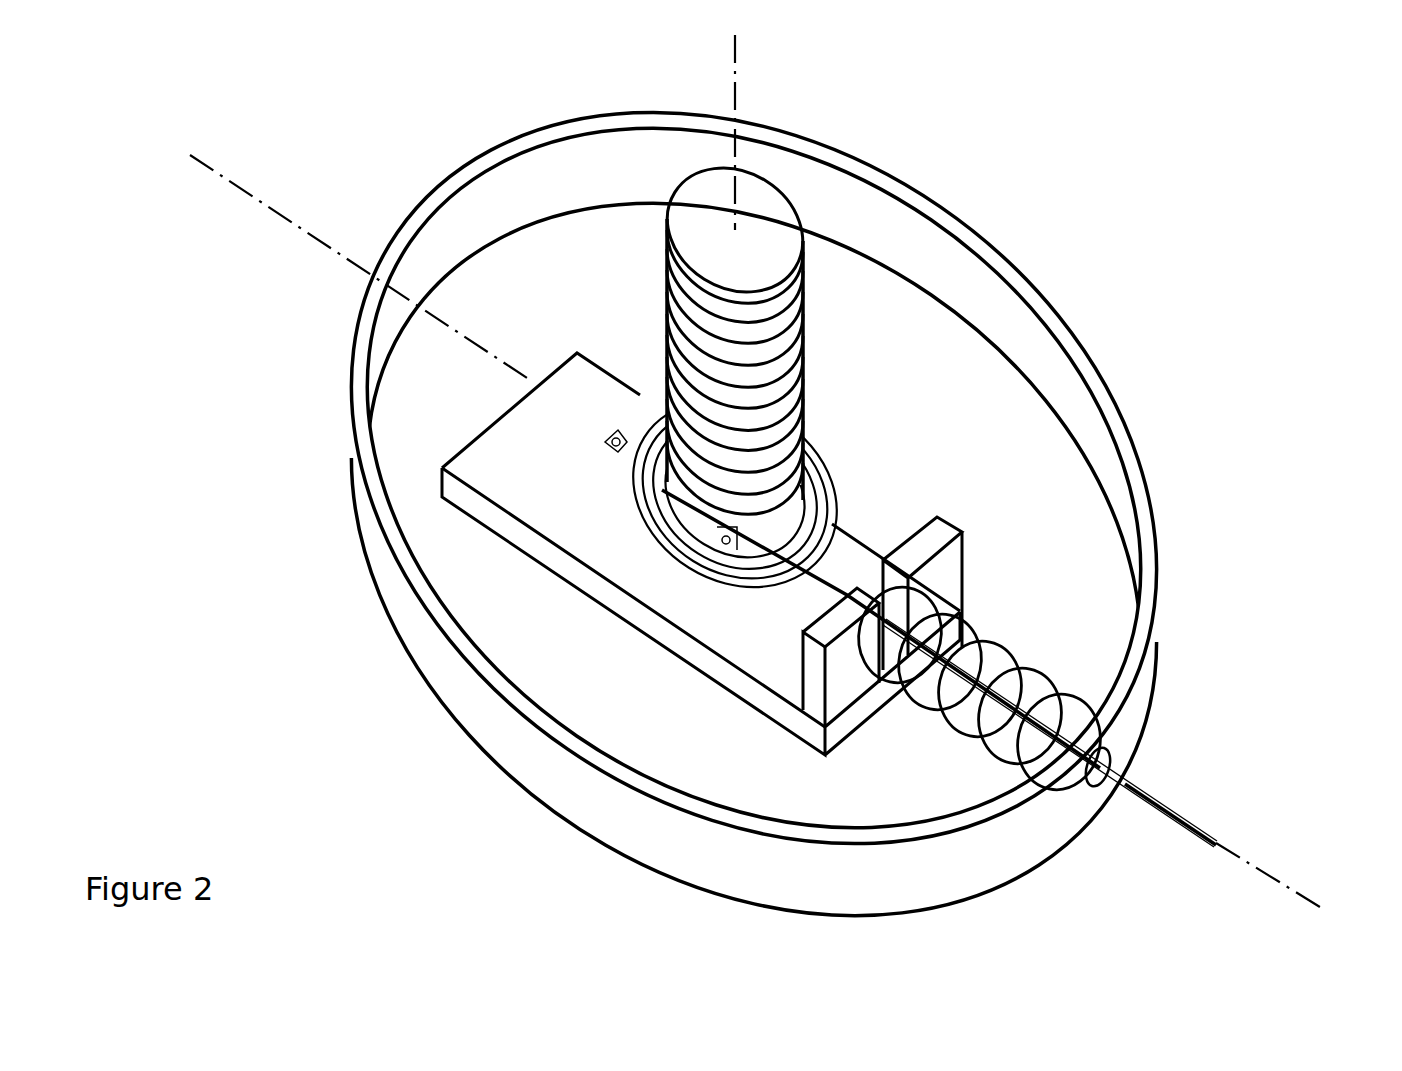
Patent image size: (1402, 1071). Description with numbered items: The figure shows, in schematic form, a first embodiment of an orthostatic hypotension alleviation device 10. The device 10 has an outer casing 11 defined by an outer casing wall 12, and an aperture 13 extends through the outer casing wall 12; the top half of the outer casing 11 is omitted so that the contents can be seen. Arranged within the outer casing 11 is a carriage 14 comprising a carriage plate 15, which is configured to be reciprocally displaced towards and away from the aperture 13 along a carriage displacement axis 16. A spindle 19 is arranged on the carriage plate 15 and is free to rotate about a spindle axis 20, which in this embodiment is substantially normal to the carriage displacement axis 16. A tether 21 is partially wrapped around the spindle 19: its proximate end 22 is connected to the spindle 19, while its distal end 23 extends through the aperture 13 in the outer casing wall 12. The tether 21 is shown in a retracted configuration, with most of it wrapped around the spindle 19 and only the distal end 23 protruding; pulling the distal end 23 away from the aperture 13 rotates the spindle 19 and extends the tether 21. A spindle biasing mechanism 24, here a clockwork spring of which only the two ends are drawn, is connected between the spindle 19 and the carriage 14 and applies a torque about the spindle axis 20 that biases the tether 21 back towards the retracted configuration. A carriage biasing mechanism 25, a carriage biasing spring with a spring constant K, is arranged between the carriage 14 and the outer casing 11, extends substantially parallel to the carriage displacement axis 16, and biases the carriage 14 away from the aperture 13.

The orthostatic hypotension alleviation device 10 is at (341, 187).
The outer casing 11 is at (306, 577).
The outer casing wall 12 is at (443, 663).
The aperture 13 is at (1127, 777).
The carriage 14 is at (592, 515).
The carriage plate 15 is at (588, 383).
The carriage displacement axis 16 is at (1273, 873).
The spindle 19 is at (780, 410).
The spindle axis 20 is at (745, 54).
The tether 21 is at (1167, 807).
The proximate end 22 is at (800, 332).
The distal end 23 is at (1222, 843).
The spindle biasing mechanism 24 is at (727, 575).
The carriage biasing mechanism 25 is at (1033, 650).